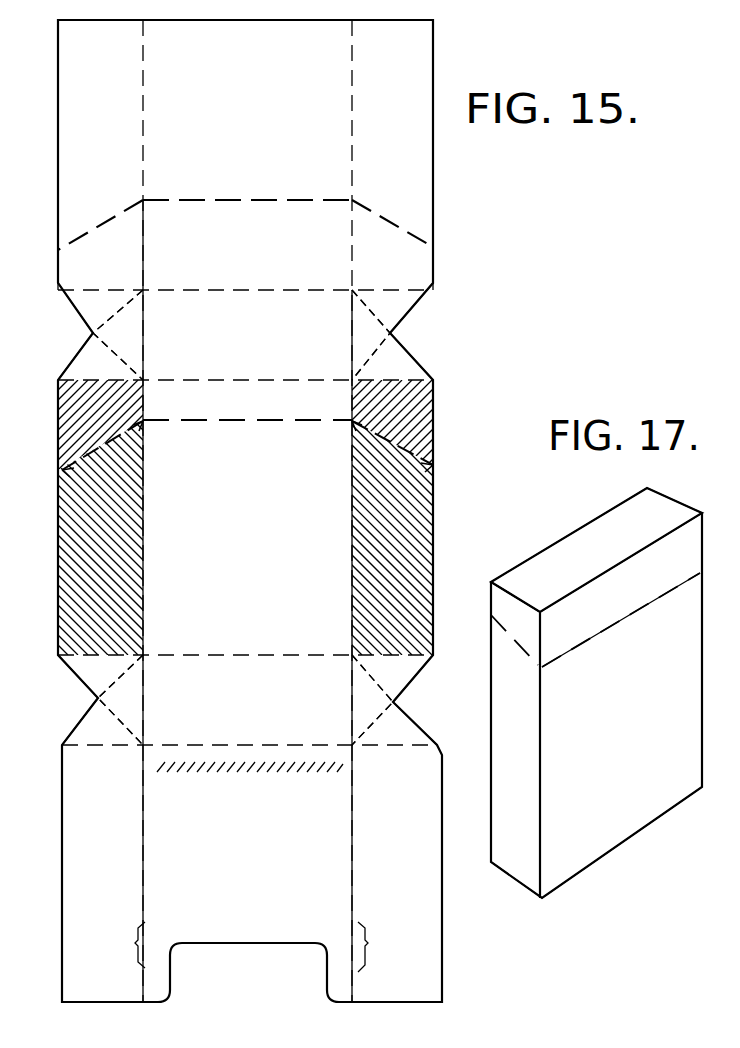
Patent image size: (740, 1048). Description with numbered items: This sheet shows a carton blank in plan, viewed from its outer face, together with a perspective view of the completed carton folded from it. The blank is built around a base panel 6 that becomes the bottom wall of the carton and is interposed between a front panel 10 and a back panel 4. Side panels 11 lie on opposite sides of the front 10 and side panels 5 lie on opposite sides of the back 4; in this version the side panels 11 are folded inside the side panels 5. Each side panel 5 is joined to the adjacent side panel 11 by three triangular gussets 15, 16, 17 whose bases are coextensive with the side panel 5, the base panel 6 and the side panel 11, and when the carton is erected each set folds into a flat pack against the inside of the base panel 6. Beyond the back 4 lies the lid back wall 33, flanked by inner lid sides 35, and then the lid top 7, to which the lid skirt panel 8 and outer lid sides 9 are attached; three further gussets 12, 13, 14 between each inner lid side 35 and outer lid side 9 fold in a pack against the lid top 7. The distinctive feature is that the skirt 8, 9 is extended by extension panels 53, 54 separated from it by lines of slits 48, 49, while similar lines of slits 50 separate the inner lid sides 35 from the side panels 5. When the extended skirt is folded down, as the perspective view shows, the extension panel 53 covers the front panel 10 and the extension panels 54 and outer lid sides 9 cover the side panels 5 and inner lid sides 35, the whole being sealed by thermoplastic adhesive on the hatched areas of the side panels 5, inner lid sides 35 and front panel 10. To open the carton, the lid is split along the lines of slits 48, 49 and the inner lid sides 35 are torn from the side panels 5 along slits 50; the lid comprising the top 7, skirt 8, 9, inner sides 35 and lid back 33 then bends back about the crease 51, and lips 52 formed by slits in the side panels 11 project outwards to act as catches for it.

In FIG. 15, the back panel 4 is at (251, 555).
In FIG. 15, the side panel 5 is at (93, 553).
In FIG. 15, the base panel 6 is at (240, 705).
In FIG. 15, the lid top panel 7 is at (243, 353).
In FIG. 17, the lid top panel 7 is at (580, 540).
In FIG. 15, the lid skirt panel 8 is at (240, 255).
In FIG. 17, the lid skirt panel 8 is at (668, 562).
In FIG. 15, the outer lid side tab 9 is at (96, 273).
In FIG. 17, the outer lid side tab 9 is at (512, 615).
In FIG. 15, the front panel 10 is at (245, 863).
In FIG. 15, the side panel 11 is at (95, 863).
In FIG. 15, the lid gusset 12 is at (103, 360).
In FIG. 15, the lid gusset 13 is at (128, 334).
In FIG. 15, the lid gusset 14 is at (102, 308).
In FIG. 15, the gusset 15 is at (102, 672).
In FIG. 15, the gusset 16 is at (128, 707).
In FIG. 15, the gusset 17 is at (98, 722).
In FIG. 15, the lid back wall 33 is at (252, 402).
In FIG. 15, the inner lid side 35 is at (88, 406).
In FIG. 15, the line of slits 48 is at (276, 200).
In FIG. 15, the line of slits 49 is at (104, 220).
In FIG. 15, the line of slits 50 is at (92, 452).
In FIG. 15, the crease 51 is at (285, 422).
In FIG. 15, the lip 52 is at (136, 943).
In FIG. 15, the extension panel 53 is at (237, 113).
In FIG. 17, the extension panel 53 is at (648, 790).
In FIG. 15, the extension panel 54 is at (87, 131).
In FIG. 17, the extension panel 54 is at (522, 855).